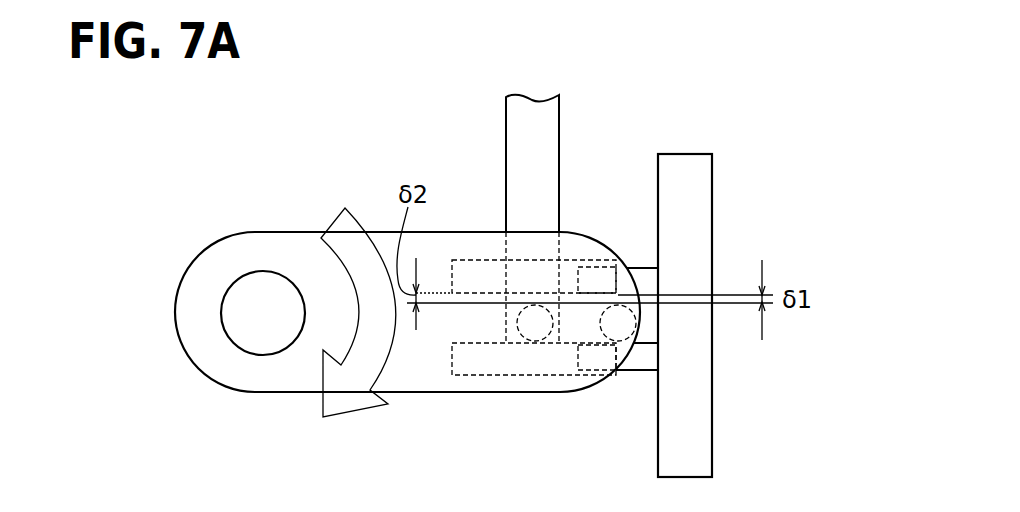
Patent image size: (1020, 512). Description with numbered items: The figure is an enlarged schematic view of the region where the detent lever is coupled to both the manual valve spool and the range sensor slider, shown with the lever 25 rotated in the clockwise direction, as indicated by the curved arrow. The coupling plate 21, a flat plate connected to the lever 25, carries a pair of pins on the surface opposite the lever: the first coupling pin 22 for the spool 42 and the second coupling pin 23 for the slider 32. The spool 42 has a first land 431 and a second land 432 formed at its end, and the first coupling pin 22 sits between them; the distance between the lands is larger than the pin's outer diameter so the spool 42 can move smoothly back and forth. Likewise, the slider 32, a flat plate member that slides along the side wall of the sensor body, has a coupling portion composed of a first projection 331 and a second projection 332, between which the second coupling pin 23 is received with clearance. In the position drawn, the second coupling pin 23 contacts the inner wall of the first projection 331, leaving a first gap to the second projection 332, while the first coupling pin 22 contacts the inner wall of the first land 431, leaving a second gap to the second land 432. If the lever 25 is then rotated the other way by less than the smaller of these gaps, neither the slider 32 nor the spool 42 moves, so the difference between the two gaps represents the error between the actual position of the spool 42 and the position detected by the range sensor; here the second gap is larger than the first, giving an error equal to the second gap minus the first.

The coupling plate 21 is at (268, 375).
The first coupling pin 22 is at (537, 328).
The second coupling pin 23 is at (628, 325).
The lever 25 is at (263, 298).
The slider 32 is at (695, 408).
The spool 42 is at (545, 127).
The first projection 331 is at (590, 357).
The second projection 332 is at (590, 278).
The first land 431 is at (483, 357).
The second land 432 is at (478, 280).